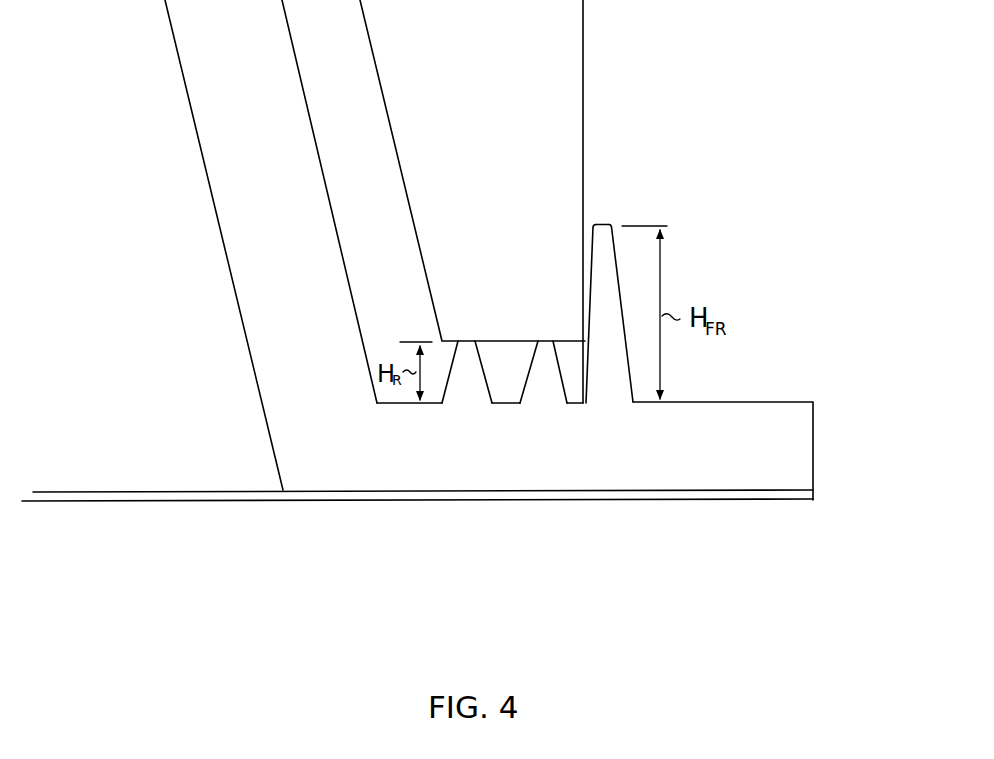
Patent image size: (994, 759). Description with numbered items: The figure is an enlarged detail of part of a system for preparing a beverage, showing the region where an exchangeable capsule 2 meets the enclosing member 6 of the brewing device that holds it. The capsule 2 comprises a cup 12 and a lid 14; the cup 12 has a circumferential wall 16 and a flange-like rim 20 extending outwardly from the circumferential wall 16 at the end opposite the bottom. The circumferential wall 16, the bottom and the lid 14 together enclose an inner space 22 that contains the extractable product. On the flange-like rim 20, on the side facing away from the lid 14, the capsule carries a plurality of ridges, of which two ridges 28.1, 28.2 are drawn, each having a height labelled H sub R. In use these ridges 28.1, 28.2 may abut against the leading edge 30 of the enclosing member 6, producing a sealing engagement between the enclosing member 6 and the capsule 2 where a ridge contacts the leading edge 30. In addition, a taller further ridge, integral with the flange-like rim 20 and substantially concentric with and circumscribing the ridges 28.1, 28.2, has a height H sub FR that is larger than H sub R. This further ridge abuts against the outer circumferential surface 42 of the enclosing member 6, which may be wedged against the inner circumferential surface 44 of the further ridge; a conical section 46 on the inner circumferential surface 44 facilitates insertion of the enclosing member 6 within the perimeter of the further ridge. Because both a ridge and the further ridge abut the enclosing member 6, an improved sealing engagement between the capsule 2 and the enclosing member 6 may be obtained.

The exchangeable capsule 2 is at (290, 468).
The enclosing member 6 is at (567, 167).
The cup 12 is at (205, 98).
The lid 14 is at (727, 495).
The circumferential wall 16 is at (250, 277).
The flange-like rim 20 is at (802, 457).
The inner space 22 is at (240, 480).
The ridge 28.1 is at (468, 387).
The ridge 28.2 is at (550, 388).
The leading edge 30 is at (456, 341).
The outer circumferential surface 42 is at (578, 200).
The inner circumferential surface 44 is at (590, 263).
The conical section 46 is at (590, 247).